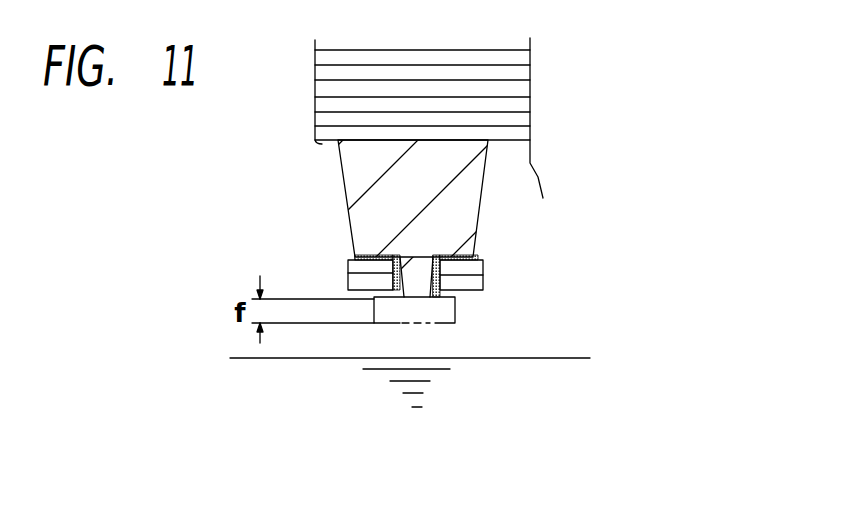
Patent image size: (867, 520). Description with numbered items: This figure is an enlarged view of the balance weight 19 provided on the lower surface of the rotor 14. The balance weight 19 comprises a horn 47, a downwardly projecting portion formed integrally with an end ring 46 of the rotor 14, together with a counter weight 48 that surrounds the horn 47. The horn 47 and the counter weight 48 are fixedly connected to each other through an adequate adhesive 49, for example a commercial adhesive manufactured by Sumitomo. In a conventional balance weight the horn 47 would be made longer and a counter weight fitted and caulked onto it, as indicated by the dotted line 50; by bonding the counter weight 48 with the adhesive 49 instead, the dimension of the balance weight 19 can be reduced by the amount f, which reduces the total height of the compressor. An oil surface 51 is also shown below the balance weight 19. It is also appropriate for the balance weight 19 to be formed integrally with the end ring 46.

The rotor 14 is at (390, 57).
The end ring 46 is at (388, 200).
The horn 47 is at (418, 290).
The counter weight 48 is at (353, 265).
The balance weight 19 is at (473, 280).
The adhesive 49 is at (455, 295).
The dotted line 50 is at (443, 325).
The oil surface 51 is at (452, 363).